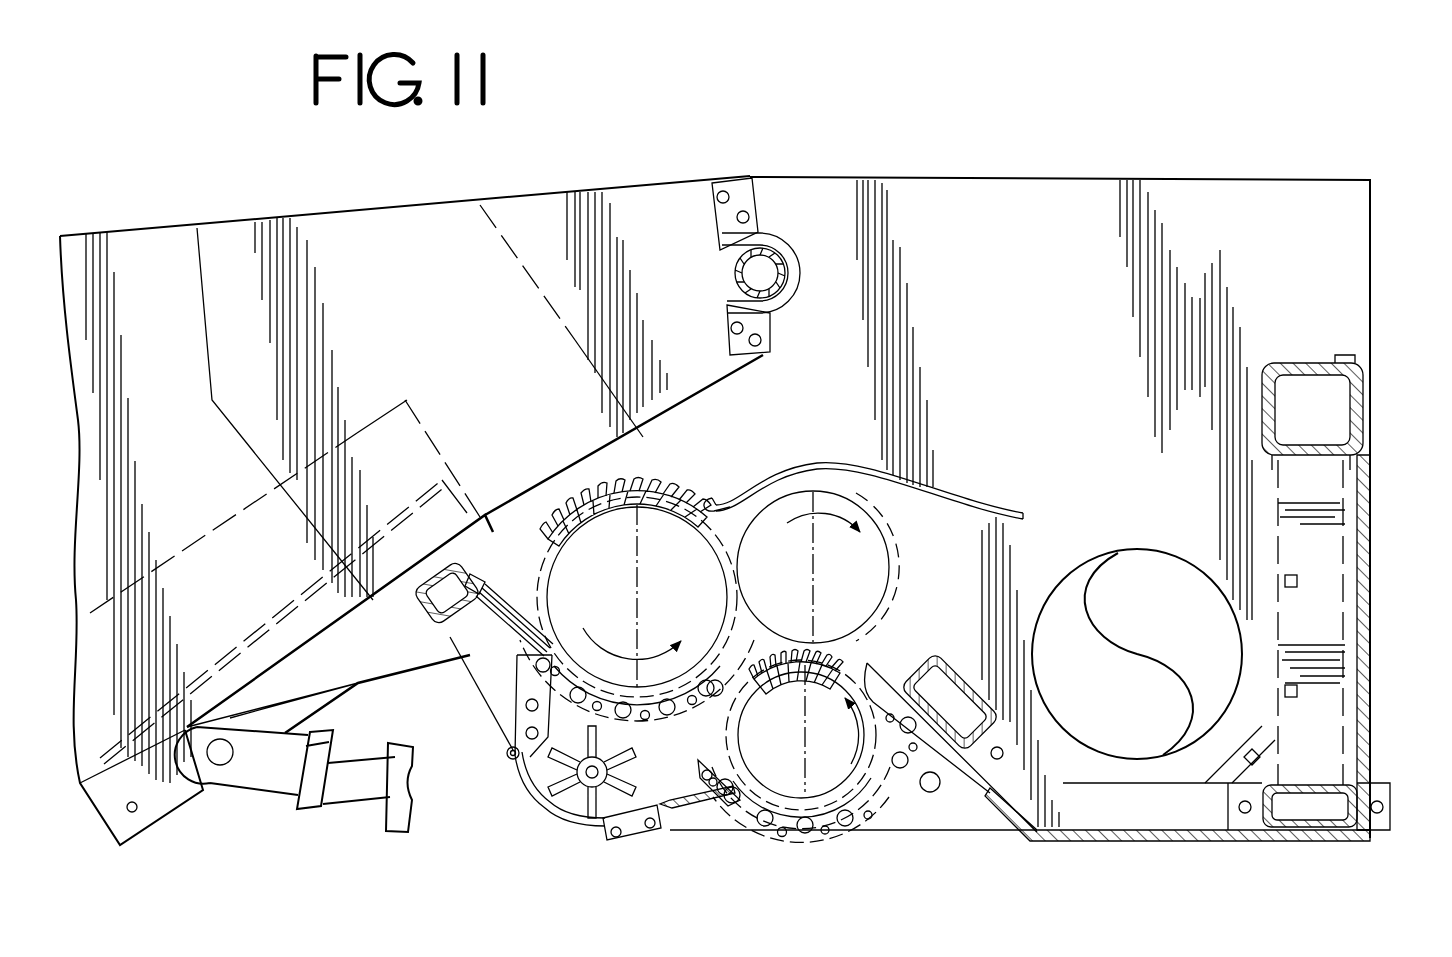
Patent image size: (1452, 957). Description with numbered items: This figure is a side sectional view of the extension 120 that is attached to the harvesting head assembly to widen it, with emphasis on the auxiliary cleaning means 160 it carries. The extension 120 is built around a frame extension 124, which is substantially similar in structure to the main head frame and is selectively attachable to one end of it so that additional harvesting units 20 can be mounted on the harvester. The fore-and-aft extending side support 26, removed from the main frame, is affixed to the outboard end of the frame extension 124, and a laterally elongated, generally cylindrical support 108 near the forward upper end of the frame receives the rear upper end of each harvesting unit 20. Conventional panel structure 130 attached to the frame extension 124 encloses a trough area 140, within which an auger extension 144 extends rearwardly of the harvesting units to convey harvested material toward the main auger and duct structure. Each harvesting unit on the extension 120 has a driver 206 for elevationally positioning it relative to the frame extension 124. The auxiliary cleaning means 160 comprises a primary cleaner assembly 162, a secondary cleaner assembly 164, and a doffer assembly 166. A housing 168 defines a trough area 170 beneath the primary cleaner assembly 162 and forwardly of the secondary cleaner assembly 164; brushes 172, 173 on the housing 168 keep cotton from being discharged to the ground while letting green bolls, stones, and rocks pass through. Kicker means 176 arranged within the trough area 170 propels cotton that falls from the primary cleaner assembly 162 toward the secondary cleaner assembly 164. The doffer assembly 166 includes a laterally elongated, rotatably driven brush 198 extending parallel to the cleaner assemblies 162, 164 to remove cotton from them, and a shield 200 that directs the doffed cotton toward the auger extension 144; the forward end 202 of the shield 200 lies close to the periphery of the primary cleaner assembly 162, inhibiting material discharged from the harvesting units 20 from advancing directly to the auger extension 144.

The harvesting unit 20 is at (176, 226).
The support plate 26 is at (1060, 192).
The support 108 is at (788, 268).
The auxiliary cleaning means 160 is at (782, 407).
The primary cleaner assembly 162 is at (664, 486).
The forward end 202 is at (711, 506).
The shield 200 is at (991, 513).
The doffer assembly 166 is at (888, 540).
The brush 198 is at (878, 596).
The secondary cleaner assembly 164 is at (819, 845).
The brush 172 is at (520, 625).
The housing 168 is at (532, 794).
The trough area 170 is at (572, 803).
The kicker means 176 is at (602, 849).
The brush 173 is at (700, 797).
The driver 206 is at (262, 794).
The frame extension 124 is at (1288, 360).
The extension 120 is at (1380, 374).
The panel structure 130 is at (1374, 470).
The auger extension 144 is at (1180, 548).
The trough area 140 is at (1180, 780).